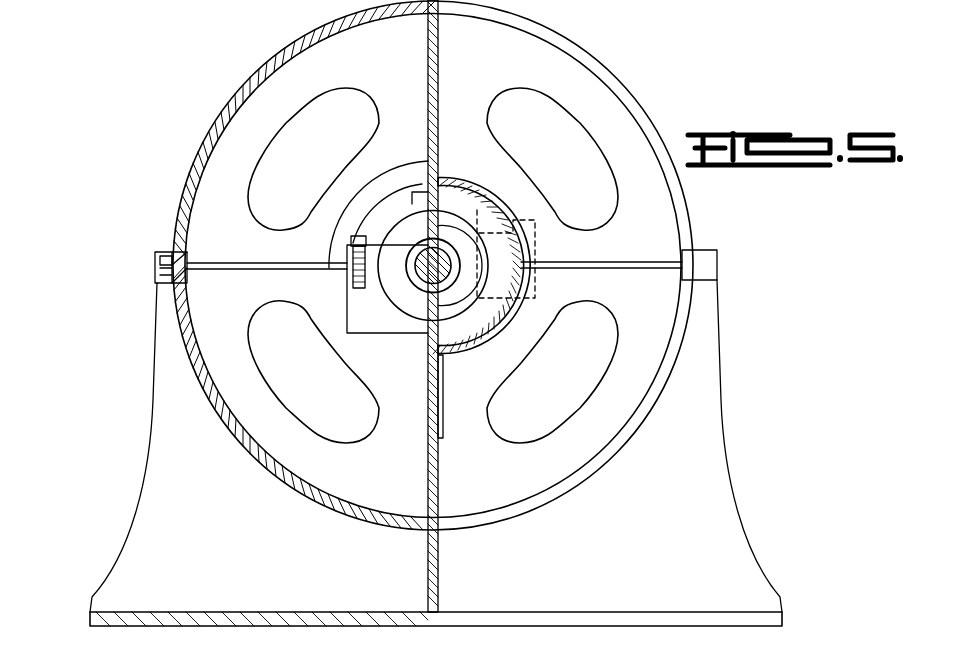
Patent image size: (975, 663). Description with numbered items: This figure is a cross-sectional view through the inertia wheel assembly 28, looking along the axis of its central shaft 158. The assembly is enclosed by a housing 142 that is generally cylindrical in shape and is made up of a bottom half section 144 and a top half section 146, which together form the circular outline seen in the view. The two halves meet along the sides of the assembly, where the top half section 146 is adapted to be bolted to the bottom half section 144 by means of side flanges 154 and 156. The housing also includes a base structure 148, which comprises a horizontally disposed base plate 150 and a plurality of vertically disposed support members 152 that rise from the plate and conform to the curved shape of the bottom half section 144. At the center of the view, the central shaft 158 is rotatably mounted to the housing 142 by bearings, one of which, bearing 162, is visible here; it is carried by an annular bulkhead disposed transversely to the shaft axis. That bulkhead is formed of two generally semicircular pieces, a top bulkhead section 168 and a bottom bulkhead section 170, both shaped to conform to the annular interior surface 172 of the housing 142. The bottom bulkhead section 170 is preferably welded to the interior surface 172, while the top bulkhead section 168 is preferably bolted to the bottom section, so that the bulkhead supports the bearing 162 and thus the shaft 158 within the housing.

The inertia wheel assembly 28 is at (126, 141).
The housing 142 is at (703, 65).
The bottom half section 144 is at (600, 453).
The top half section 146 is at (582, 53).
The base structure 148 is at (153, 423).
The base plate 150 is at (540, 608).
The support members 152 is at (705, 410).
The side flange 154 is at (155, 268).
The side flange 156 is at (700, 263).
The central shaft 158 is at (422, 275).
The bearing 162 is at (397, 225).
The top bulkhead section 168 is at (332, 62).
The bottom bulkhead section 170 is at (248, 402).
The interior surface 172 is at (288, 460).